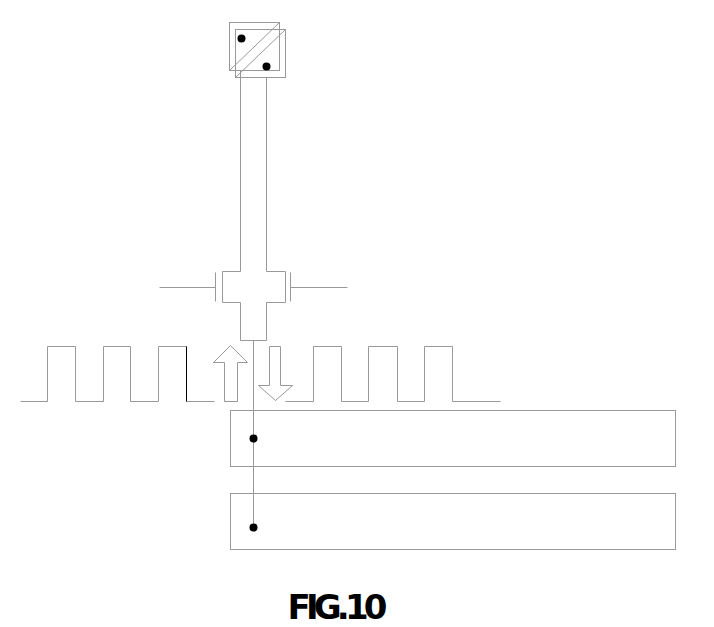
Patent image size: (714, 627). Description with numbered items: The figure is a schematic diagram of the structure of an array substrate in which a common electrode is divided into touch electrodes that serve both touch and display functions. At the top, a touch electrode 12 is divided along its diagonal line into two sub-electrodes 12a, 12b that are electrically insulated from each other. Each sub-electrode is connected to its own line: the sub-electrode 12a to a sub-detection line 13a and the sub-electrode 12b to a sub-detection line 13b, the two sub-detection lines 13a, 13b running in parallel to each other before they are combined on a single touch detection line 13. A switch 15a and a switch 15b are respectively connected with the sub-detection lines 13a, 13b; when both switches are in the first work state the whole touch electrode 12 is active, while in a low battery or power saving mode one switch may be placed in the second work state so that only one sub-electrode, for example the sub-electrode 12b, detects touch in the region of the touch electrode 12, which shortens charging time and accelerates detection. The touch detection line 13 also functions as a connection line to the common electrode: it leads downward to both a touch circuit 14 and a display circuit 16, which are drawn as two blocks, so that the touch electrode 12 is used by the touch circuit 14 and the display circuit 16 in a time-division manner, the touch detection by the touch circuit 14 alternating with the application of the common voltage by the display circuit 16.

The touch electrode 12 is at (326, 51).
The sub-electrode 12a is at (244, 33).
The sub-electrode 12b is at (285, 70).
The touch detection line 13 is at (255, 414).
The sub-detection line 13a is at (240, 215).
The sub-detection line 13b is at (266, 155).
The touch circuit 14 is at (507, 410).
The switch 15a is at (210, 282).
The switch 15b is at (299, 278).
The display circuit 16 is at (230, 520).